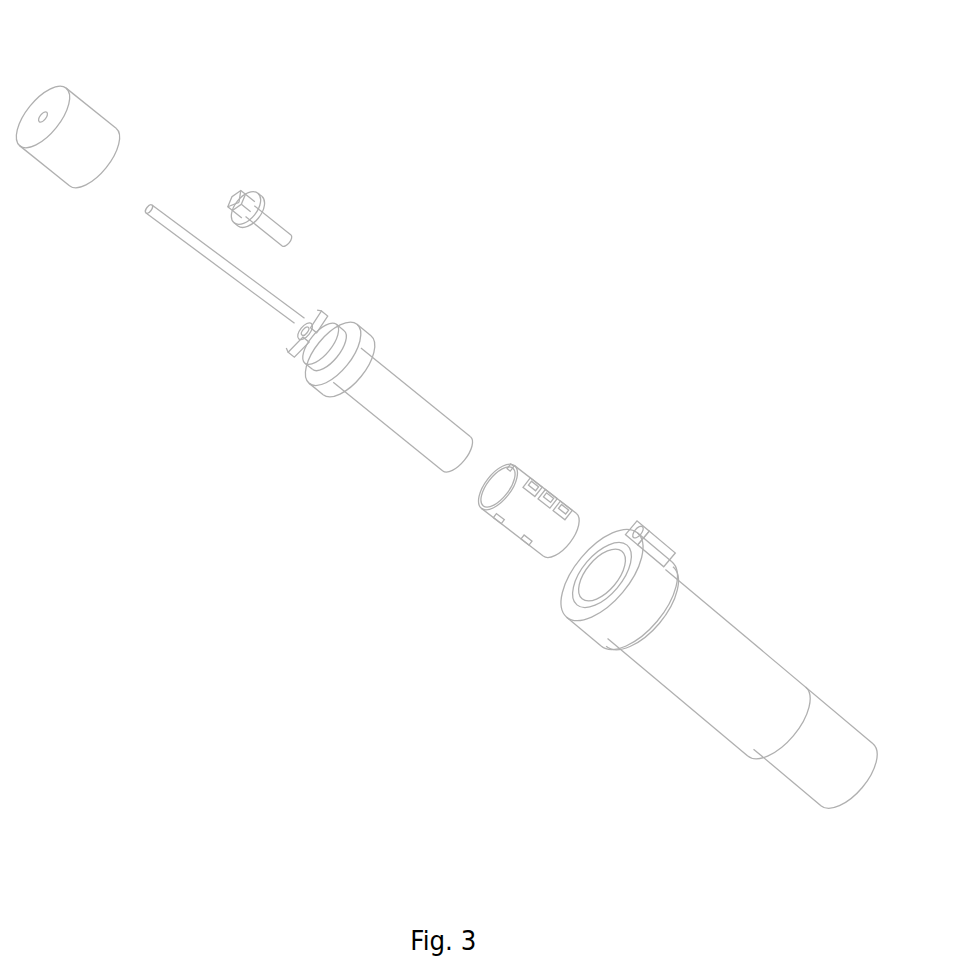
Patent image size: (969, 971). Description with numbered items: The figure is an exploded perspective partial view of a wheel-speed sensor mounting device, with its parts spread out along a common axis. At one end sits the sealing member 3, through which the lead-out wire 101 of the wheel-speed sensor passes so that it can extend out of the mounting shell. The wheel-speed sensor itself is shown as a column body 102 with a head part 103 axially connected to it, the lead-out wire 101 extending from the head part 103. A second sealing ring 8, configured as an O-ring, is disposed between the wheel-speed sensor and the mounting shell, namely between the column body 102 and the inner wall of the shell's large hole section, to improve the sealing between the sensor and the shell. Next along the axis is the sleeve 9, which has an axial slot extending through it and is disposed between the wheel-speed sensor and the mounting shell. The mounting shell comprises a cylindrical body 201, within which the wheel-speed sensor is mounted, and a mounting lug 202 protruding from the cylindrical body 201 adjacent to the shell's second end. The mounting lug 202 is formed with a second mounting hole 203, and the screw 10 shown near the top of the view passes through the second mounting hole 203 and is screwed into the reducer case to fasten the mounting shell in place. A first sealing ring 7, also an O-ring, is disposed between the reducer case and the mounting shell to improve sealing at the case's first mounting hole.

The sealing member 3 is at (82, 141).
The screw 10 is at (273, 230).
The second sealing ring 8 is at (368, 342).
The column body 102 is at (413, 423).
The lead-out wire 101 is at (213, 258).
The head part 103 is at (315, 377).
The sleeve 9 is at (528, 522).
The first sealing ring 7 is at (622, 648).
The mounting lug 202 is at (665, 545).
The second mounting hole 203 is at (647, 522).
The cylindrical body 201 is at (725, 675).